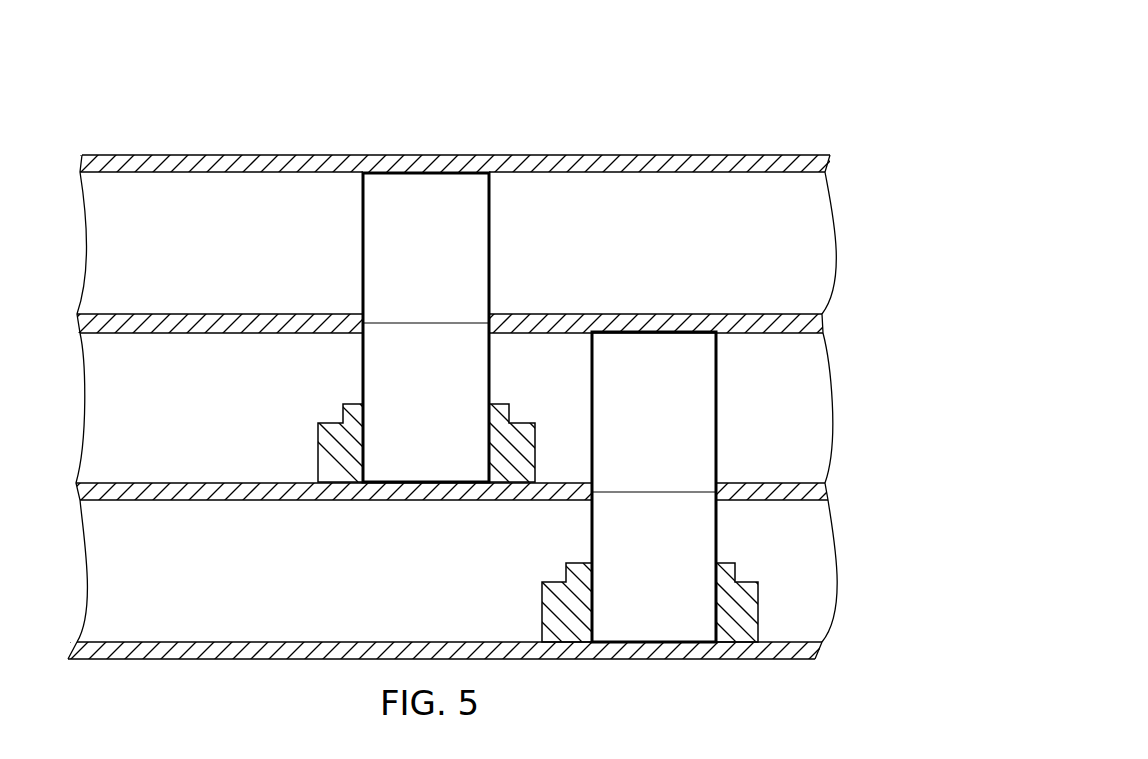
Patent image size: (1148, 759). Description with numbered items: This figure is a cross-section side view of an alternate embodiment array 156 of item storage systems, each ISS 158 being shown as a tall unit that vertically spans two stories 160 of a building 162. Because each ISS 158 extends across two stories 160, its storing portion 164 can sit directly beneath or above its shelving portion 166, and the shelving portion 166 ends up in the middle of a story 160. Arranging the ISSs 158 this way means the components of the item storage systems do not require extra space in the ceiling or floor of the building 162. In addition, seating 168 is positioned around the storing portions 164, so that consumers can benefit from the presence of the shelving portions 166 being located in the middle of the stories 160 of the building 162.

The array 156 is at (612, 252).
The ISS 158 is at (492, 222).
The story 160 is at (818, 236).
The building 162 is at (694, 103).
The storing portion 164 is at (490, 371).
The shelving portion 166 is at (490, 274).
The seating 168 is at (343, 412).